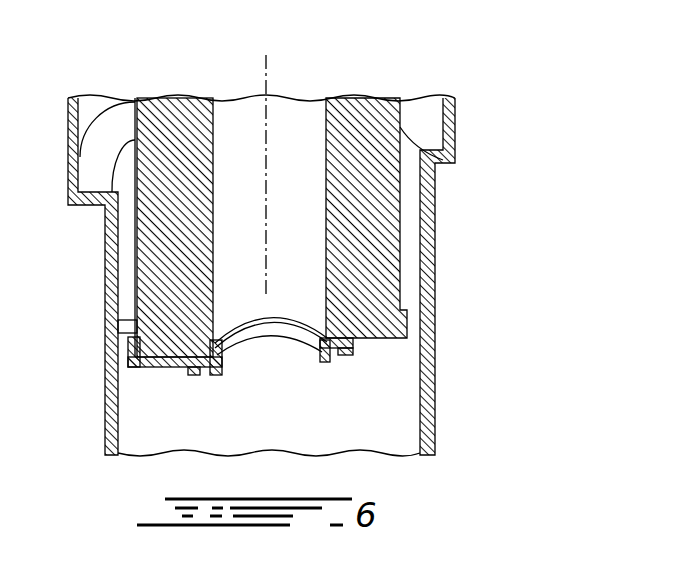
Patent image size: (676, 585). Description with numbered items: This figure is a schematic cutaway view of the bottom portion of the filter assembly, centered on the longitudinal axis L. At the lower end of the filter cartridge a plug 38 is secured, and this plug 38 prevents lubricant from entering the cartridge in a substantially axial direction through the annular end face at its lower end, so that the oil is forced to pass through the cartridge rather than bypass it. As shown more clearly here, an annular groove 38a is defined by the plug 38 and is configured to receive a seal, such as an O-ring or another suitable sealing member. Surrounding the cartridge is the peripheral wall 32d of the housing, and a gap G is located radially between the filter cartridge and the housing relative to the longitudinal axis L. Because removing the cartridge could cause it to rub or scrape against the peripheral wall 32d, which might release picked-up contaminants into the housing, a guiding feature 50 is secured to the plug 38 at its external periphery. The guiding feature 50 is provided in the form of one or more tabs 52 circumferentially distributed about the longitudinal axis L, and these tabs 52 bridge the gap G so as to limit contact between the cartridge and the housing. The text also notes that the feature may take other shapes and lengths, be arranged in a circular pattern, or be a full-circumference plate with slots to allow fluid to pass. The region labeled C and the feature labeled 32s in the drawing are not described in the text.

The peripheral wall 32d is at (435, 296).
The housing spring tab 32s is at (420, 128).
The tab 52 is at (130, 333).
The guiding feature 50 is at (128, 350).
The plug 38 is at (193, 372).
The annular groove 38a is at (336, 362).
The gap G is at (418, 342).
The longitudinal axis L is at (268, 74).
The cavity C is at (272, 432).